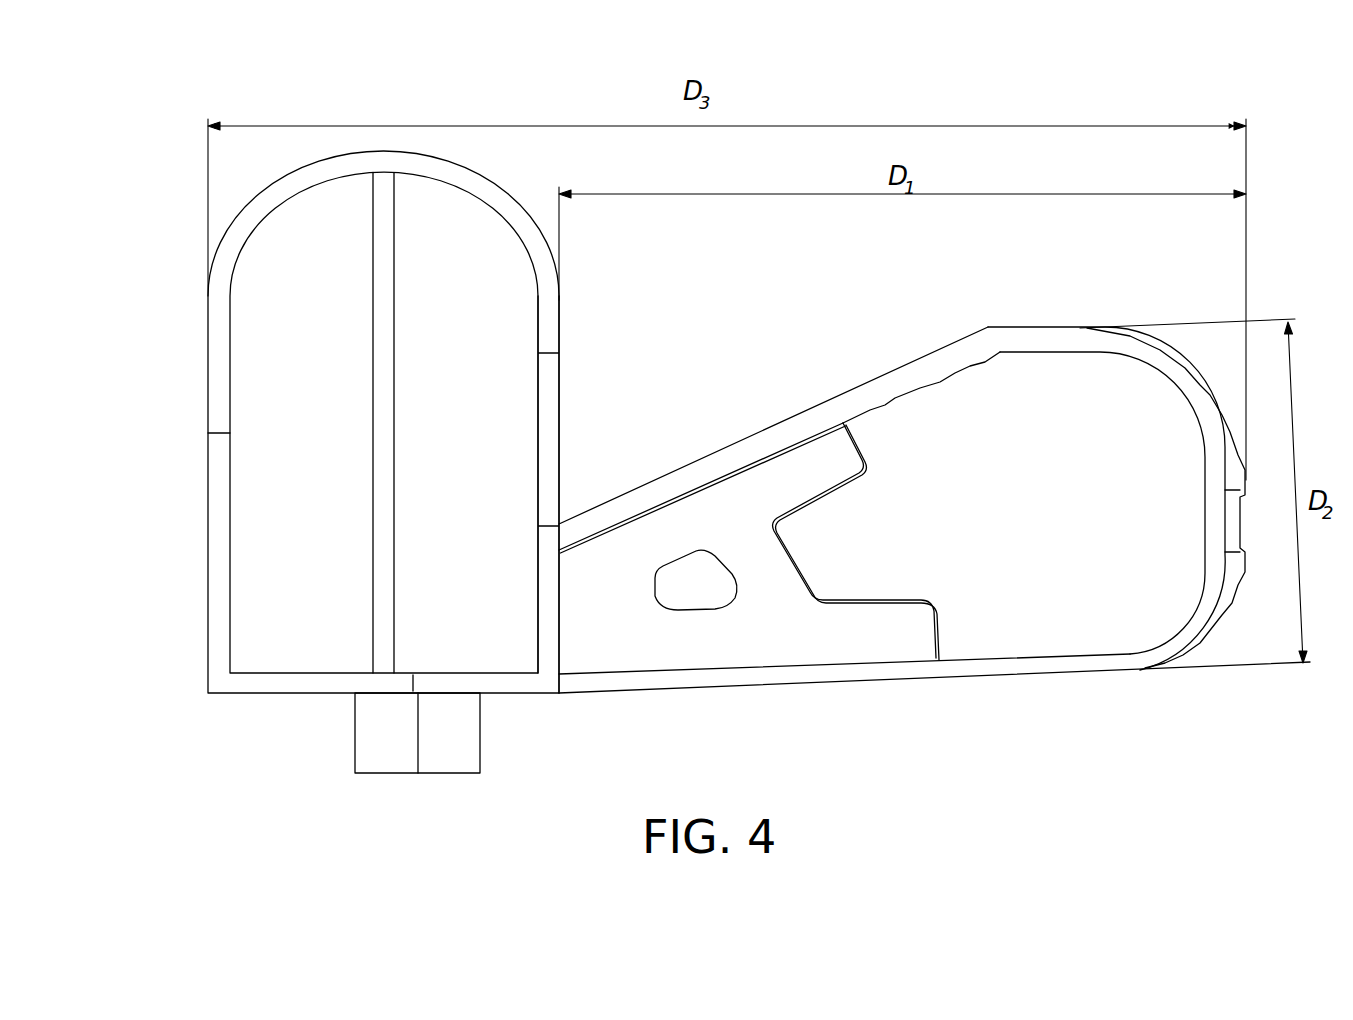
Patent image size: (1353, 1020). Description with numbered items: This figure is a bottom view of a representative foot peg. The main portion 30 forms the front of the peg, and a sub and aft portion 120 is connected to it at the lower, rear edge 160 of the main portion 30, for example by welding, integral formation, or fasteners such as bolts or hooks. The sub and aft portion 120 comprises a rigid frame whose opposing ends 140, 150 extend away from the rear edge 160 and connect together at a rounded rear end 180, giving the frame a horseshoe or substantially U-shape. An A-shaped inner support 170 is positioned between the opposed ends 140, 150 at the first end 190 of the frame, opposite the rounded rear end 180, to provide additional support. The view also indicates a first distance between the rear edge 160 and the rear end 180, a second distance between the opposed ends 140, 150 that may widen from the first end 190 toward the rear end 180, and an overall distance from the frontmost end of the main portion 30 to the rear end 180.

The main portion 30 is at (188, 308).
The sub and aft portion 120 is at (982, 708).
The opposing end 140 is at (803, 412).
The opposing end 150 is at (736, 688).
The lower, rear edge 160 is at (559, 385).
The inner support 170 is at (795, 557).
The rounded rear end 180 is at (1205, 501).
The first end 190 is at (559, 602).